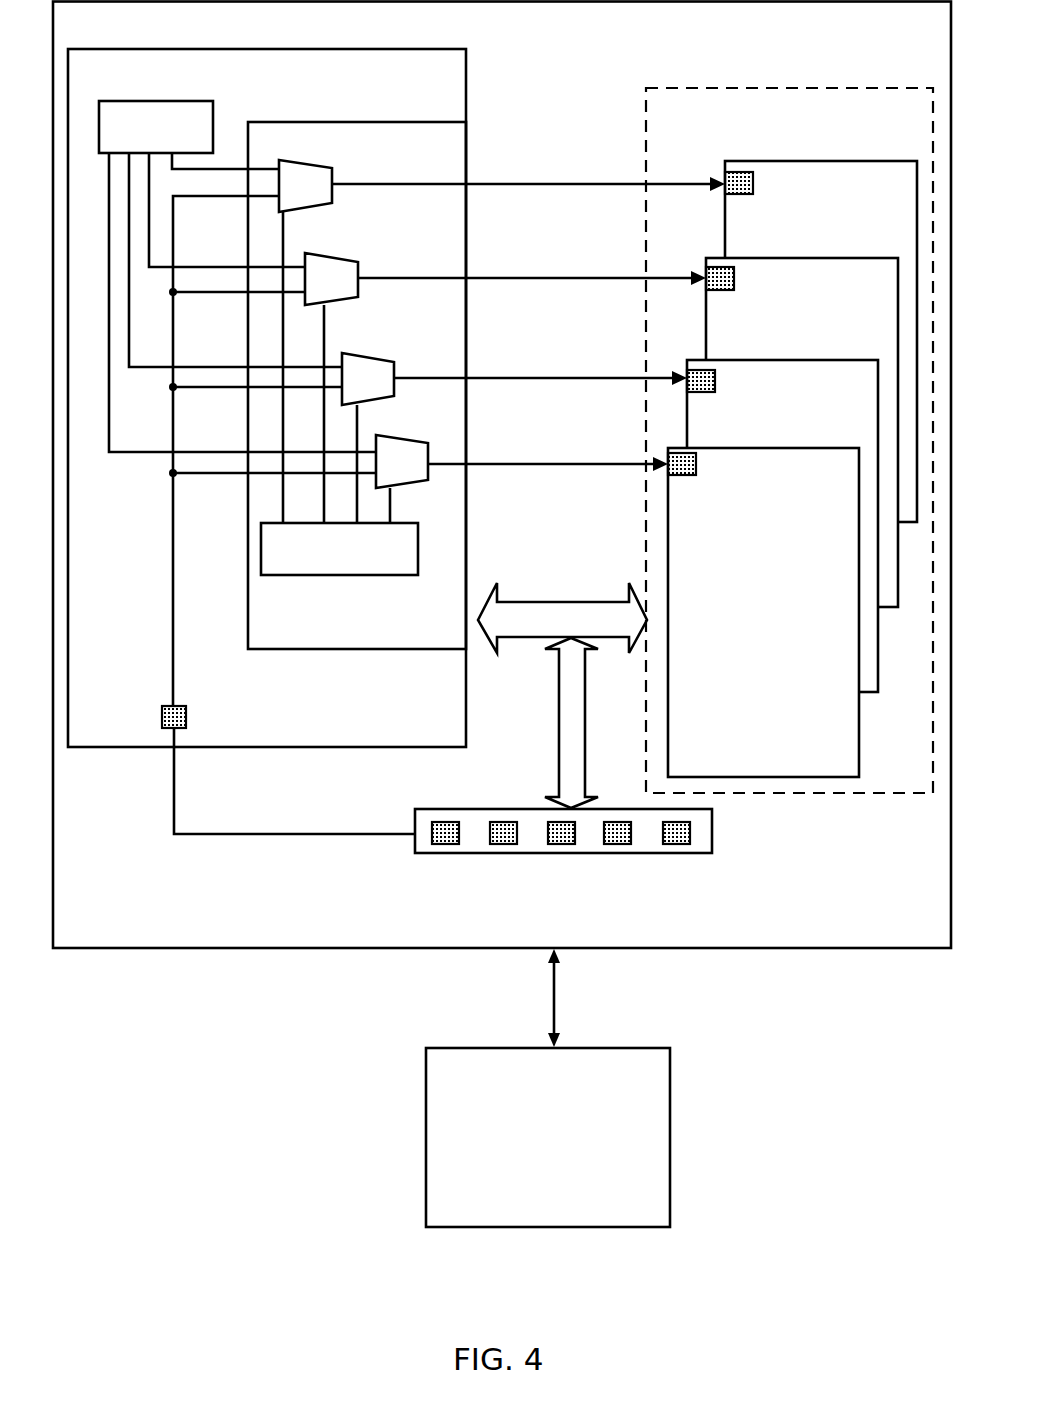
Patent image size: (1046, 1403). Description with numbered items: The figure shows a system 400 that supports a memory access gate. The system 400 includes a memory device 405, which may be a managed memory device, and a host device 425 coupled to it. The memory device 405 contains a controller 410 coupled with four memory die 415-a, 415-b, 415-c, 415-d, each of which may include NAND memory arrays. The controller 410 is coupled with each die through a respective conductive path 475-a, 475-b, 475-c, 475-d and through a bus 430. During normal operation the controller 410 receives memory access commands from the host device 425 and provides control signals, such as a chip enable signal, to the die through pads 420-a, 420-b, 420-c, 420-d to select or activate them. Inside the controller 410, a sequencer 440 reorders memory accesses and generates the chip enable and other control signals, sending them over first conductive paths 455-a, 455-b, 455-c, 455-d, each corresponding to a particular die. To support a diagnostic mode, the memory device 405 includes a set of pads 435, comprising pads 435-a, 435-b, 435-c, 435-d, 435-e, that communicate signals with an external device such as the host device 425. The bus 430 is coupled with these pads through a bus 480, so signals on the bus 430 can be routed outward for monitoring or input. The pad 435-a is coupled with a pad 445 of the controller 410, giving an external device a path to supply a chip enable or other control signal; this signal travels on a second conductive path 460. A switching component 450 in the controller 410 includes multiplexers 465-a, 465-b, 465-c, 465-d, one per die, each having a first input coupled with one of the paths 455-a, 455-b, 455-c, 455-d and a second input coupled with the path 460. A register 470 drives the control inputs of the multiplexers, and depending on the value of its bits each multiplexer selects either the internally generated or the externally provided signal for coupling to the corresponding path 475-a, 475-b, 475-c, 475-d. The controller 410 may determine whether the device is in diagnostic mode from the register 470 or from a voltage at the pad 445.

The system 400 is at (502, 683).
The memory device 405 is at (833, 950).
The controller 410 is at (362, 748).
The memory die 415-a is at (722, 172).
The memory die 415-b is at (705, 267).
The memory die 415-c is at (686, 370).
The memory die 415-d is at (667, 453).
The pad 420-a is at (754, 190).
The pad 420-b is at (735, 286).
The pad 420-c is at (715, 388).
The pad 420-d is at (696, 470).
The host device 425 is at (583, 1047).
The bus 430 is at (537, 601).
The set of pads 435 is at (603, 857).
The pad 435-a is at (437, 845).
The pad 435-b is at (497, 845).
The pad 435-c is at (556, 845).
The pad 435-d is at (611, 845).
The pad 435-e is at (670, 845).
The sequencer 440 is at (144, 100).
The pad 445 is at (187, 715).
The switching component 450 is at (338, 121).
The first conductive path 455-a is at (217, 168).
The first conductive path 455-b is at (183, 266).
The first conductive path 455-c is at (183, 366).
The first conductive path 455-d is at (183, 451).
The second conductive path 460 is at (174, 625).
The multiplexer 465-a is at (322, 159).
The multiplexer 465-b is at (340, 256).
The multiplexer 465-c is at (404, 337).
The multiplexer 465-d is at (433, 418).
The register 470 is at (350, 577).
The conductive path 475-a is at (580, 183).
The conductive path 475-b is at (578, 277).
The conductive path 475-c is at (578, 377).
The conductive path 475-d is at (578, 463).
The bus 480 is at (559, 750).